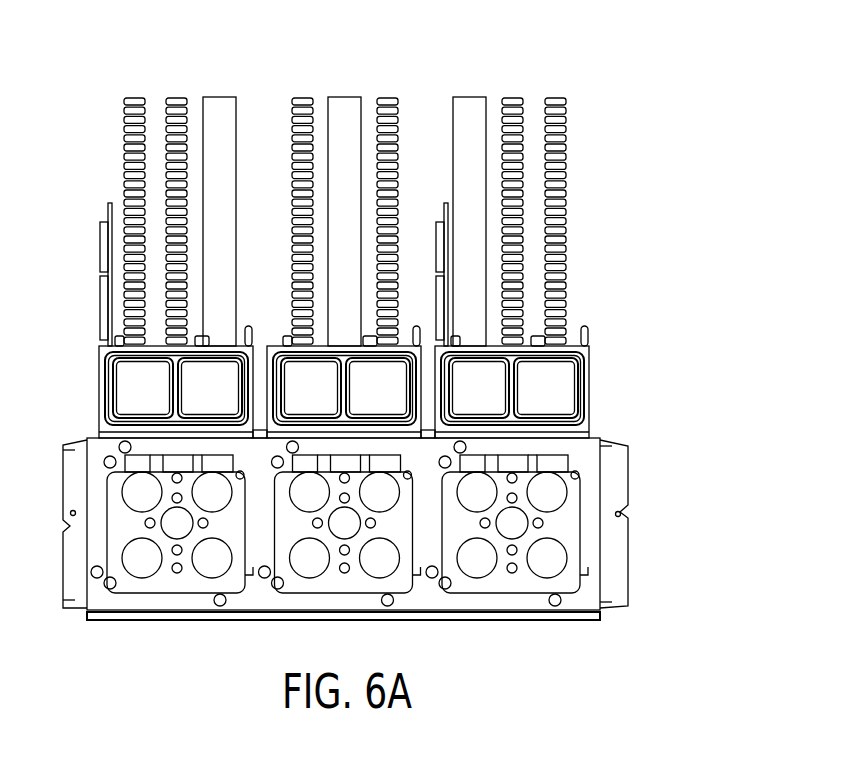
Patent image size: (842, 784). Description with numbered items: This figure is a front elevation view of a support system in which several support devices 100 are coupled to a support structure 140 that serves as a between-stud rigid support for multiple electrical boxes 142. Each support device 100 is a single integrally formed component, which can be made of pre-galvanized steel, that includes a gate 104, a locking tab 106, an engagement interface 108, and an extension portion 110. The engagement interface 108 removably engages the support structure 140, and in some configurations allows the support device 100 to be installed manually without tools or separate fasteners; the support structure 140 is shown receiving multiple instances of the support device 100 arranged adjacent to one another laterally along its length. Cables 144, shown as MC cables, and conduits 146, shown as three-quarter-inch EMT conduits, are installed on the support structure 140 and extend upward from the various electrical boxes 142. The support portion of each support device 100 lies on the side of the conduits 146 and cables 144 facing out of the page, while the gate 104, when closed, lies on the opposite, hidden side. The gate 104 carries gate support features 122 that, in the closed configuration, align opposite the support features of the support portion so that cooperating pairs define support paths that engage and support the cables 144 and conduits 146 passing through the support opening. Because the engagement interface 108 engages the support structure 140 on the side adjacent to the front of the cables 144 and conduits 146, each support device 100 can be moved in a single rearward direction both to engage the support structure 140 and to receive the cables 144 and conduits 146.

The support device 100 is at (344, 330).
The gate 104 is at (110, 207).
The locking tab 106 is at (586, 333).
The engagement interface 108 is at (100, 432).
The extension portion 110 is at (100, 354).
The gate support features 122 is at (100, 308).
The support structure 140 is at (627, 450).
The electrical boxes 142 is at (118, 525).
The cables 144 is at (139, 108).
The conduits 146 is at (232, 128).